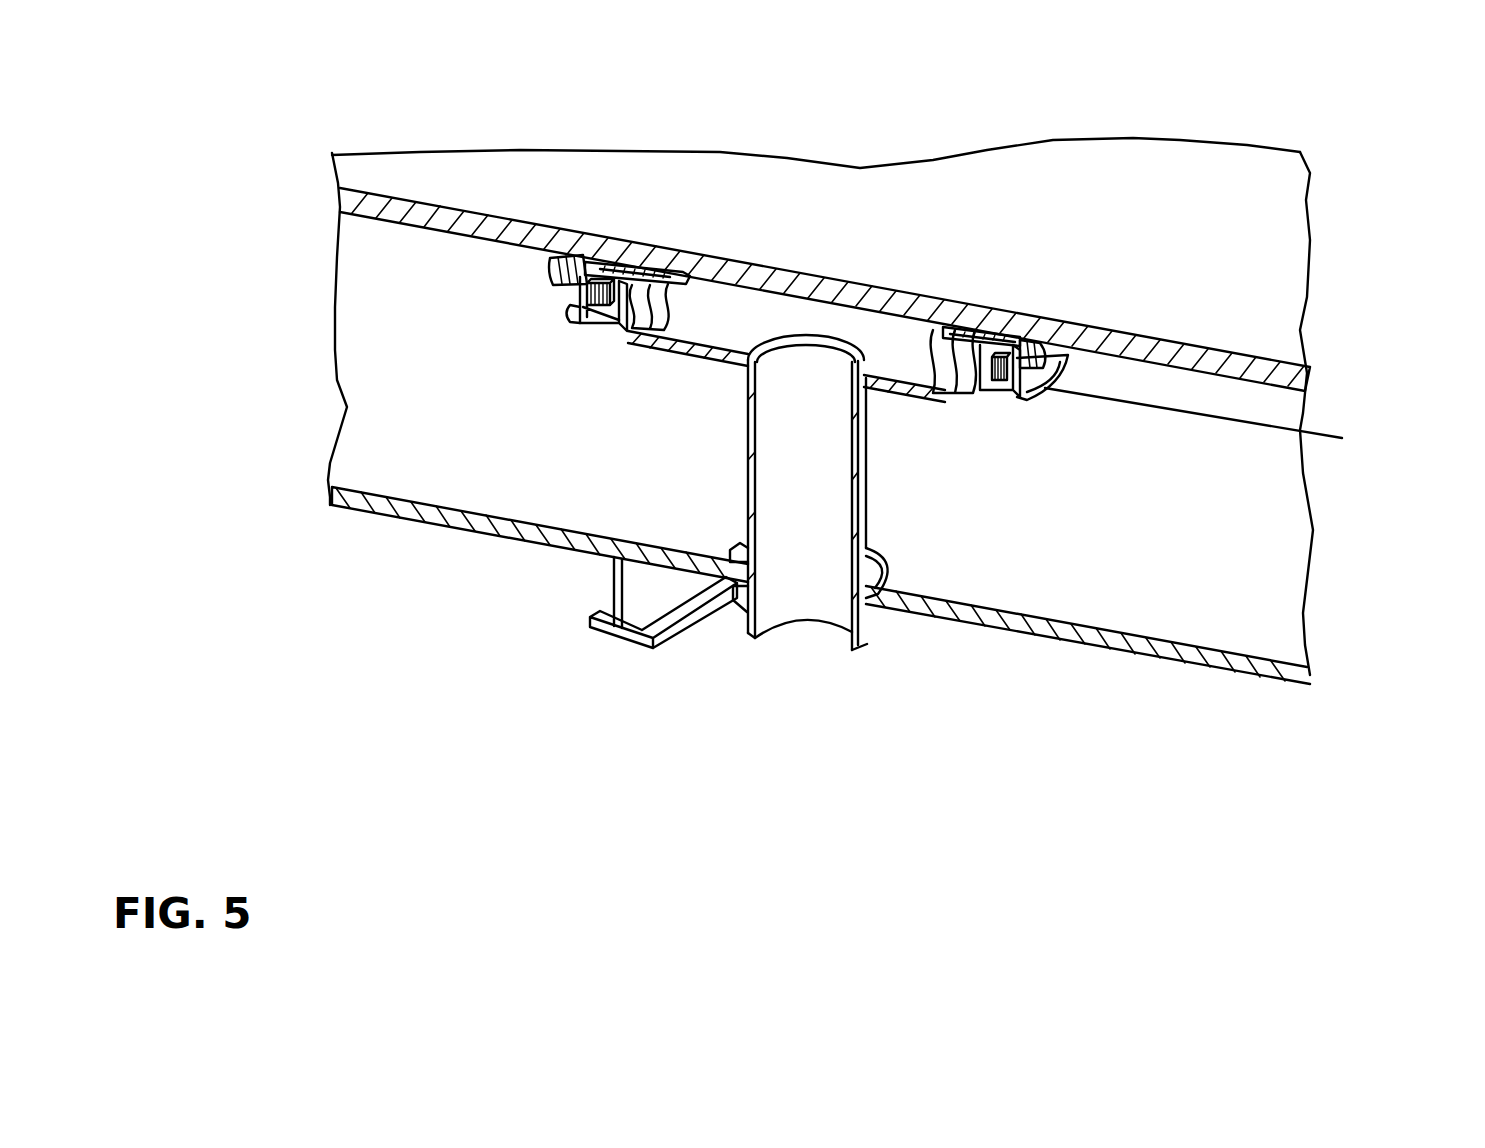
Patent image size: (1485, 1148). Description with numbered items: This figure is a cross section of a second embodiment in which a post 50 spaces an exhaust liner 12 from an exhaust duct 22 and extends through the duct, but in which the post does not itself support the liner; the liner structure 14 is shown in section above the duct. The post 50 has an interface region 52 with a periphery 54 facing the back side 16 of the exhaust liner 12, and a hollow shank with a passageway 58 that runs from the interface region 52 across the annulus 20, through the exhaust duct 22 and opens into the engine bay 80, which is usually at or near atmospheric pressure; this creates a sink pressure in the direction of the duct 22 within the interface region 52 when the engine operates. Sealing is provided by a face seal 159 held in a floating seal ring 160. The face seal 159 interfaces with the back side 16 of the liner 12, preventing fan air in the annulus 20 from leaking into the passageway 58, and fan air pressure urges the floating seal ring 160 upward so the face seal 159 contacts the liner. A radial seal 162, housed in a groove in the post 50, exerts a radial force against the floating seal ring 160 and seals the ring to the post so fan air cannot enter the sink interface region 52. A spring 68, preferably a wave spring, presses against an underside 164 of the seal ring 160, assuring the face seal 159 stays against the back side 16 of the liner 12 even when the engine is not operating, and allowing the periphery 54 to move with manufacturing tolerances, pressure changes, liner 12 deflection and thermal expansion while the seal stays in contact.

The exhaust liner 12 is at (1312, 372).
The upper skin 14 is at (1268, 266).
The back side 16 is at (372, 218).
The annulus 20 is at (375, 372).
The exhaust duct 22 is at (378, 509).
The post 50 is at (870, 493).
The interface region 52 is at (732, 303).
The periphery 54 is at (637, 323).
The passageway 58 is at (828, 598).
The spring 68 is at (651, 305).
The engine bay 80 is at (435, 613).
The face seal 159 is at (550, 270).
The floating seal ring 160 is at (1221, 421).
The radial seal 162 is at (990, 392).
The underside 164 is at (983, 388).